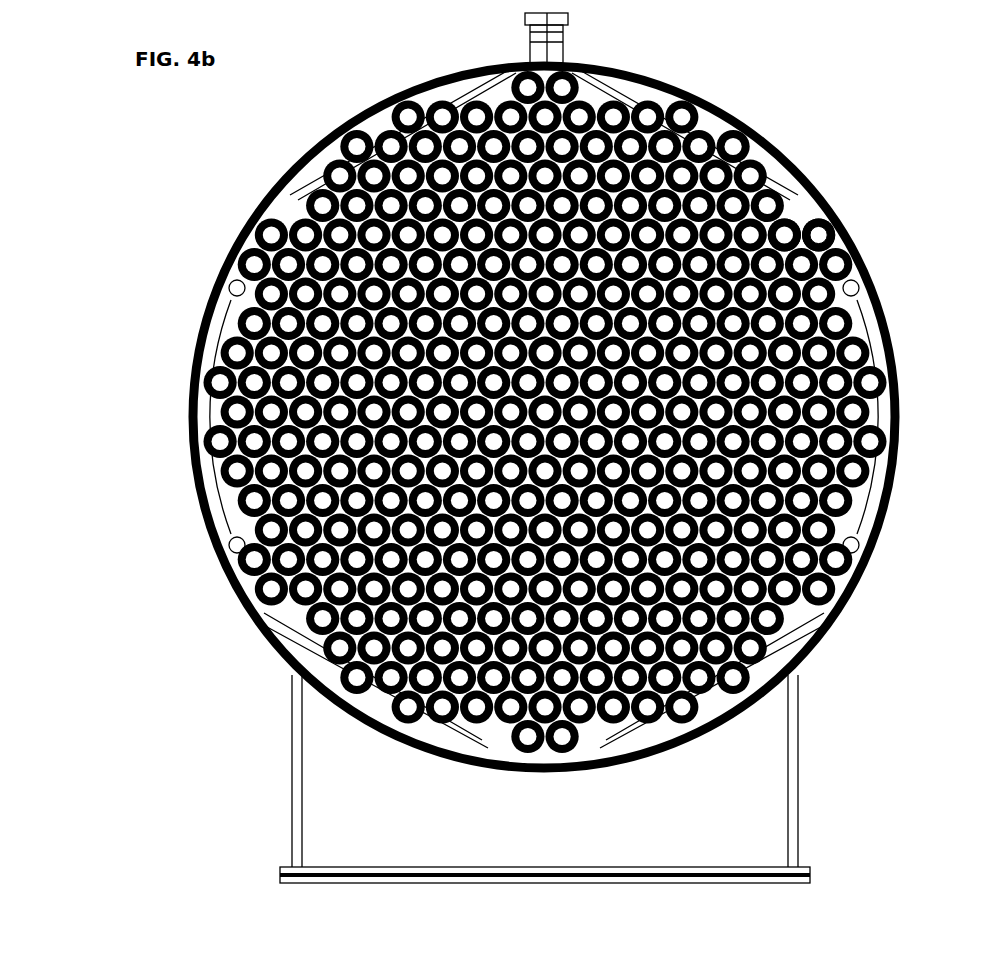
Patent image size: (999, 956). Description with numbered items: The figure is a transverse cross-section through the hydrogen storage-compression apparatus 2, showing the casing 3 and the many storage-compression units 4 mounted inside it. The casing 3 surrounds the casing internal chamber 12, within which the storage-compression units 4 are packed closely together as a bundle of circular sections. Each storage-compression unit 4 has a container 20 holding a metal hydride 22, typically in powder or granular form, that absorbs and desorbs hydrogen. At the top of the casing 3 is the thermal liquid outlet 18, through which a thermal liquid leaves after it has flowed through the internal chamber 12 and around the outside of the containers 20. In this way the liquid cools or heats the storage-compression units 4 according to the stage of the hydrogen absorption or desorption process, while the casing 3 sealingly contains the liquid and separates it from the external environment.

The hydrogen storage-compression apparatus 2 is at (878, 126).
The casing 3 is at (826, 614).
The storage-compression unit 4 is at (793, 220).
The casing internal chamber 12 is at (882, 408).
The thermal liquid outlet 18 is at (532, 50).
The container 20 is at (818, 222).
The metal hydride 22 is at (819, 232).